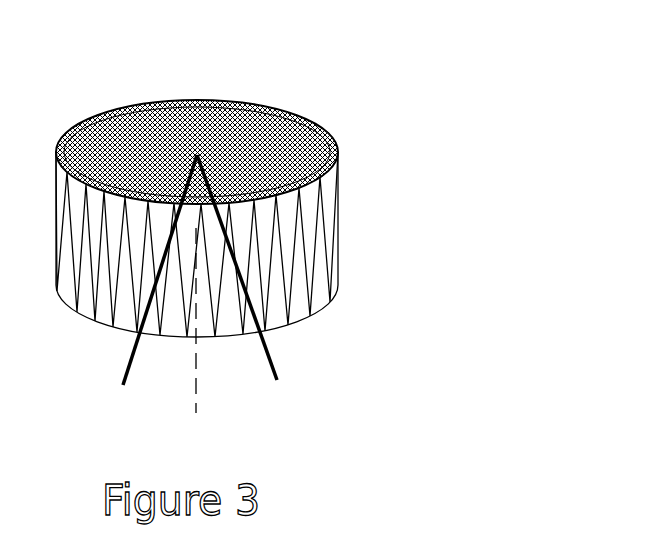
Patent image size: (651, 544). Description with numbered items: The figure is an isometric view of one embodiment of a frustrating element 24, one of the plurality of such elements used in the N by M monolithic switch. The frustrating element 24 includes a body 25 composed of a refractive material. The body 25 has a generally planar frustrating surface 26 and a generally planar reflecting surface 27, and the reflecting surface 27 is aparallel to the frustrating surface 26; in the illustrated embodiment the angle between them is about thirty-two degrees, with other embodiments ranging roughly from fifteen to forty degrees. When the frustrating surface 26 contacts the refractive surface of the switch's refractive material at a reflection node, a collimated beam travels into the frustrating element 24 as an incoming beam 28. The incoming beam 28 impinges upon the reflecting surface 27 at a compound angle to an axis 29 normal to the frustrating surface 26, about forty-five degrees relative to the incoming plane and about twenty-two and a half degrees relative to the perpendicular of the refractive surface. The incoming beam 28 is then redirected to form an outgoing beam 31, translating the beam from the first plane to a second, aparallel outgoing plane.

The frustrating element 24 is at (307, 77).
The body 25 is at (305, 236).
The frustrating surface 26 is at (293, 303).
The reflecting surface 27 is at (193, 132).
The incoming beam 28 is at (118, 286).
The axis 29 is at (150, 341).
The outgoing beam 31 is at (300, 282).